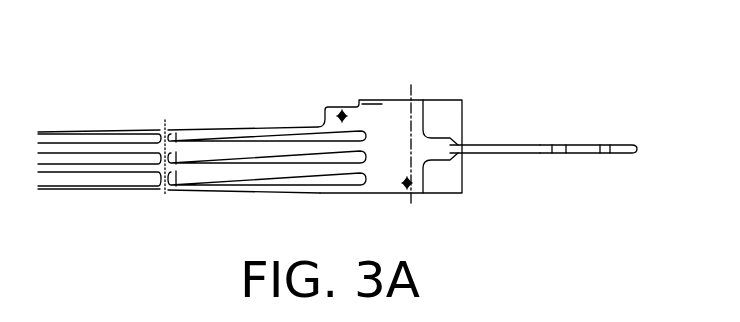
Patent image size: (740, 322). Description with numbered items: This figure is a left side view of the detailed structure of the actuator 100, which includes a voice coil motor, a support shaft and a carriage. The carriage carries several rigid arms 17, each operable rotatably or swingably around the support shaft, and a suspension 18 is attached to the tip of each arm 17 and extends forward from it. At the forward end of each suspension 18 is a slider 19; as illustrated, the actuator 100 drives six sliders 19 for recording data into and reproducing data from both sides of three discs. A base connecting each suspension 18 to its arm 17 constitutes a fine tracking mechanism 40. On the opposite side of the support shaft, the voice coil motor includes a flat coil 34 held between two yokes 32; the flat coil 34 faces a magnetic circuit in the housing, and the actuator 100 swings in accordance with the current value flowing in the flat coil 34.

The actuator 100 is at (388, 25).
The rigid arm 17 is at (248, 126).
The suspension 18 is at (92, 192).
The slider 19 is at (58, 128).
The fine tracking mechanism 40 is at (162, 124).
The yoke 32 is at (490, 149).
The flat coil 34 is at (625, 148).